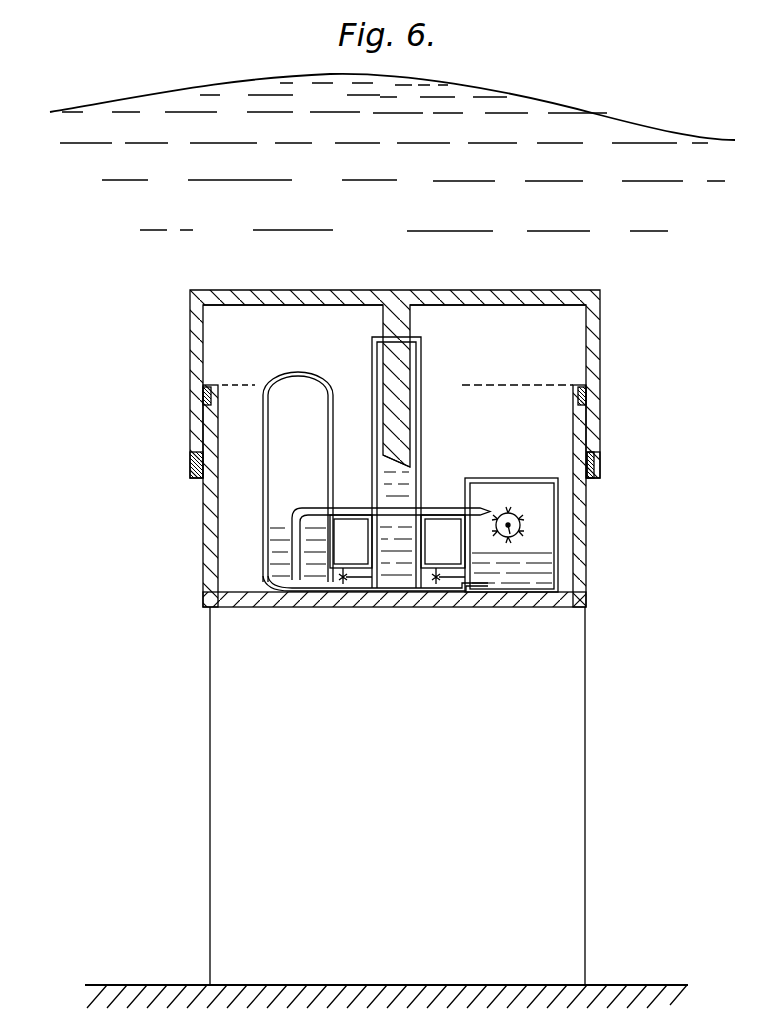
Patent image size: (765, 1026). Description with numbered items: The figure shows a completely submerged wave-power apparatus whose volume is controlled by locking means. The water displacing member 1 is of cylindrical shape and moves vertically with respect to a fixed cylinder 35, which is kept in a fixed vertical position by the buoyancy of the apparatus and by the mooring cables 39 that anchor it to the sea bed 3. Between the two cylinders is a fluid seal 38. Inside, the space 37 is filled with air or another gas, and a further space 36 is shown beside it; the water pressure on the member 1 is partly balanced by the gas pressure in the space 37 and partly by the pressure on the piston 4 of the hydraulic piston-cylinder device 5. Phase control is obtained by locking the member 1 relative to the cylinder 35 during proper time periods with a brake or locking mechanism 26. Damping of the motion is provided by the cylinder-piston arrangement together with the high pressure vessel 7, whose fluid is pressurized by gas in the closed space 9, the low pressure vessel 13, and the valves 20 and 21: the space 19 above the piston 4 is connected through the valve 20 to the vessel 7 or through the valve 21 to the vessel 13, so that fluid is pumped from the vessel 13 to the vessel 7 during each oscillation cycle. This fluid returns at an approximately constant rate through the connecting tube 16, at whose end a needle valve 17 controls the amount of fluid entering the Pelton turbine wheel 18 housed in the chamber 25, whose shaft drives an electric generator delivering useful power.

The water displacing member 1 is at (525, 292).
The sea bed 3 is at (655, 962).
The piston 4 is at (412, 463).
The hydraulic piston-cylinder device 5 is at (421, 378).
The high pressure vessel 7 is at (265, 447).
The closed space 9 is at (282, 413).
The low pressure vessel 13 is at (540, 480).
The connecting tube 16 is at (348, 506).
The needle valve 17 is at (485, 510).
The Pelton turbine wheel 18 is at (512, 533).
The space above the piston 19 is at (397, 573).
The valve 20 is at (360, 568).
The valve 21 is at (443, 580).
The chamber 25 is at (543, 517).
The brake or locking mechanism 26 is at (586, 395).
The fixed cylinder 35 is at (580, 557).
The left compartment 36 is at (412, 327).
The space 37 is at (563, 328).
The fluid seal 38 is at (594, 462).
The mooring cables 39 is at (585, 700).